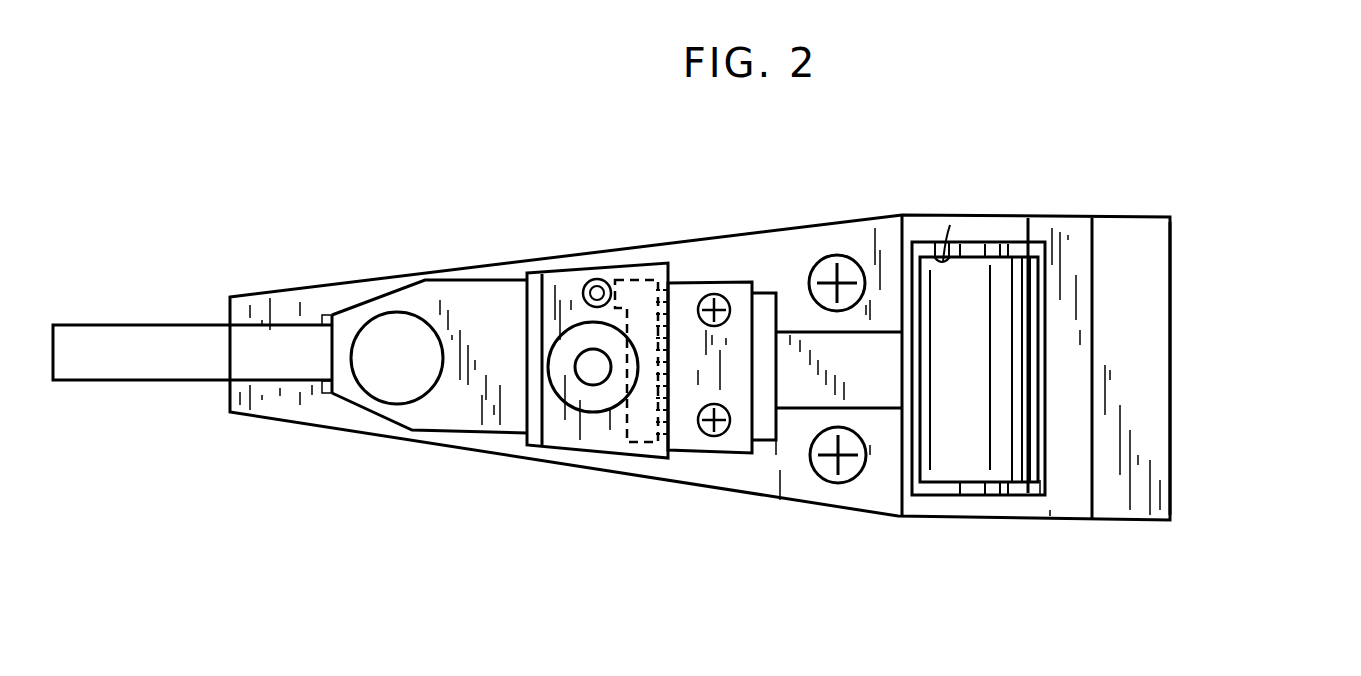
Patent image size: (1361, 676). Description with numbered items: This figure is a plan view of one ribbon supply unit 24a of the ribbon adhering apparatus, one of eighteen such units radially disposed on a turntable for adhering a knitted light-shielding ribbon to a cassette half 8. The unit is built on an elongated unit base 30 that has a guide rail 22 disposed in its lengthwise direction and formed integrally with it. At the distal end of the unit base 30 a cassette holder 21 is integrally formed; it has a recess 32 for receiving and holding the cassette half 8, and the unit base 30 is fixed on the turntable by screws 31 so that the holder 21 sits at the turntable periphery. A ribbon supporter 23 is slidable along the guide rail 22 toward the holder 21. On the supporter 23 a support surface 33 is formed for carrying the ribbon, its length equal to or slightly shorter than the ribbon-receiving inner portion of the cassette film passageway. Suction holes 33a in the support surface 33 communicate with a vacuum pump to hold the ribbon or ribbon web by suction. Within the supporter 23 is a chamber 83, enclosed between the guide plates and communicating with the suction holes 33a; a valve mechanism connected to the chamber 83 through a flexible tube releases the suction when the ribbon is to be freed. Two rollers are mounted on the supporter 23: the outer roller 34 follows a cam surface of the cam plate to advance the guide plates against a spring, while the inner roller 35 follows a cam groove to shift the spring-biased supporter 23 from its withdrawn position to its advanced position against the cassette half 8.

The cassette half 8 is at (1007, 320).
The cassette holder 21 is at (1068, 507).
The guide rail 22 is at (800, 398).
The ribbon supporter 23 is at (627, 245).
The ribbon supply unit 24a is at (1192, 404).
The unit base 30 is at (500, 268).
The screws 31 is at (825, 260).
The recess 32 is at (947, 240).
The support surface 33 is at (673, 420).
The suction holes 33a is at (669, 292).
The outer roller 34 is at (585, 400).
The inner roller 35 is at (393, 330).
The chamber 83 is at (640, 444).